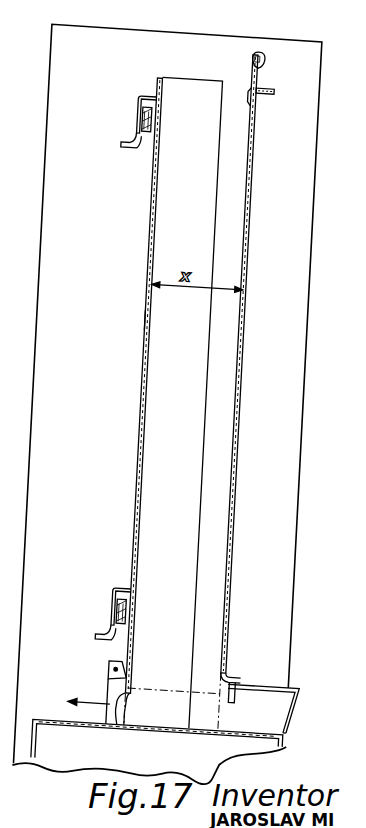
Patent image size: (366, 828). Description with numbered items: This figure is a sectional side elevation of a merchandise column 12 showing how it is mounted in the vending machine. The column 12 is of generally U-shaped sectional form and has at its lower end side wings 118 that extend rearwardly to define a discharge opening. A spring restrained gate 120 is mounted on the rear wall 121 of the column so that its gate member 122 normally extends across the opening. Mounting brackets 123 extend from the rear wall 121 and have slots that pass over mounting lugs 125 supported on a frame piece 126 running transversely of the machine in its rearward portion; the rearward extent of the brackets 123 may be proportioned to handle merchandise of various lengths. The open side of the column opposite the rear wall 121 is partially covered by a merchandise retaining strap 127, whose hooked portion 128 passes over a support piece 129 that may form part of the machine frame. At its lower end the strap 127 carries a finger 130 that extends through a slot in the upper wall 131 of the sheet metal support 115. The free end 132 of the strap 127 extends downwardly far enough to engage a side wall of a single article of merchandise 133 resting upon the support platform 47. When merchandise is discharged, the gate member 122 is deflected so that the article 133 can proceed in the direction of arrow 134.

The merchandise column 12 is at (132, 417).
The side wings 118 is at (167, 511).
The rear wall 121 is at (161, 463).
The mounting brackets 123 is at (146, 87).
The mounting lugs 125 is at (148, 106).
The frame piece 126 is at (127, 138).
The merchandise retaining strap 127 is at (260, 123).
The hooked portion 128 is at (255, 43).
The support piece 129 is at (267, 77).
The spring restrained gate 120 is at (143, 654).
The gate member 122 is at (110, 724).
The article of merchandise 133 is at (175, 675).
The arrow 134 is at (120, 695).
The support platform 47 is at (184, 719).
The finger 130 is at (268, 661).
The upper wall 131 is at (306, 668).
The free end 132 is at (260, 688).
The sheet metal support 115 is at (334, 700).